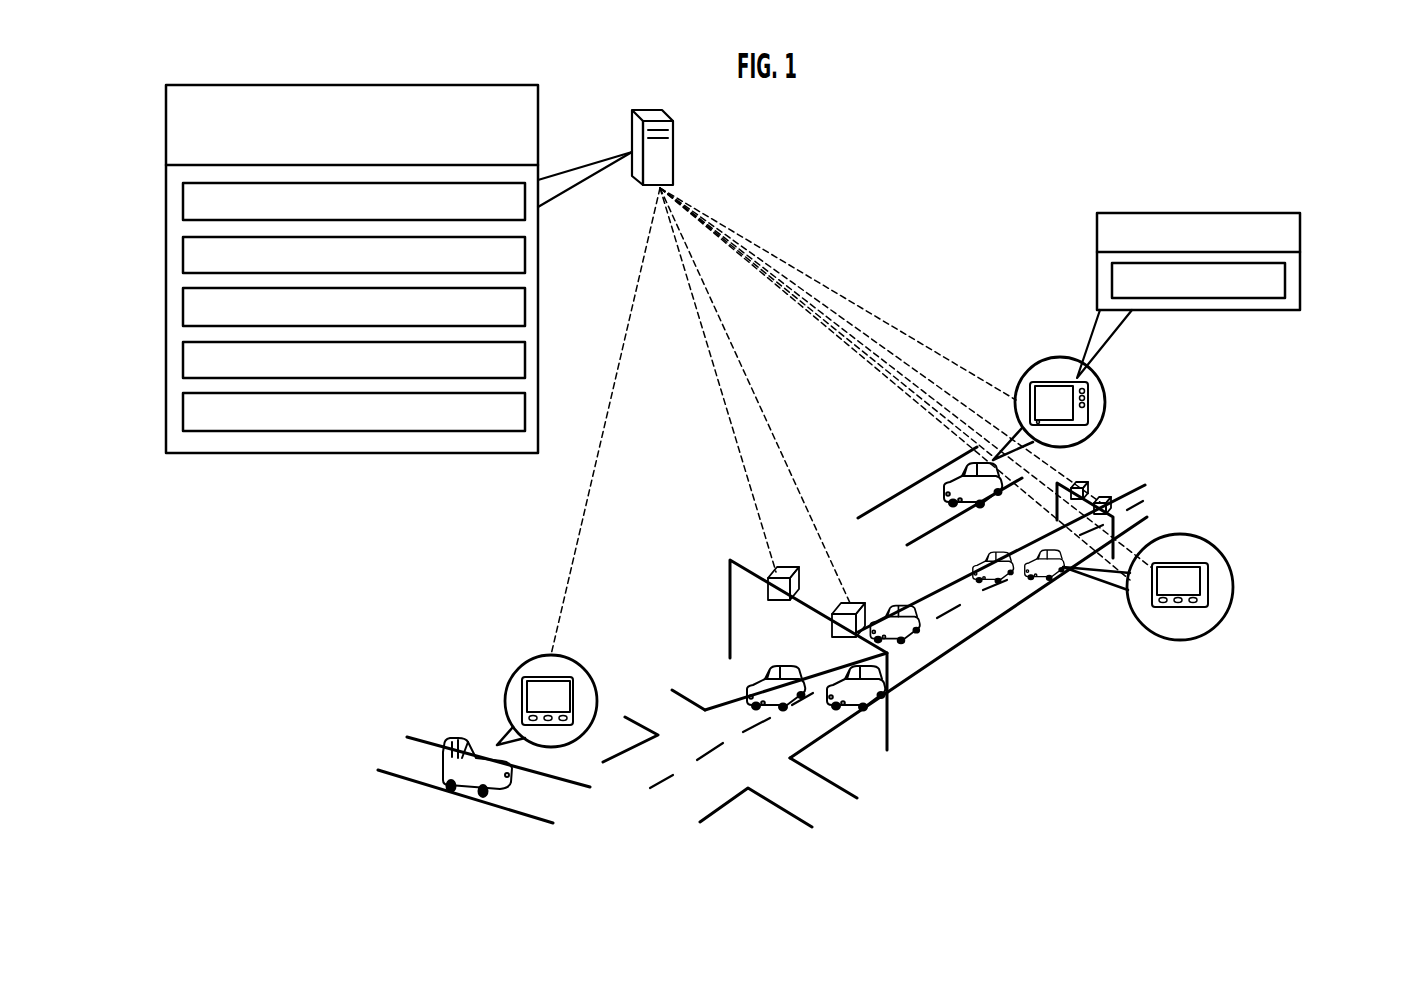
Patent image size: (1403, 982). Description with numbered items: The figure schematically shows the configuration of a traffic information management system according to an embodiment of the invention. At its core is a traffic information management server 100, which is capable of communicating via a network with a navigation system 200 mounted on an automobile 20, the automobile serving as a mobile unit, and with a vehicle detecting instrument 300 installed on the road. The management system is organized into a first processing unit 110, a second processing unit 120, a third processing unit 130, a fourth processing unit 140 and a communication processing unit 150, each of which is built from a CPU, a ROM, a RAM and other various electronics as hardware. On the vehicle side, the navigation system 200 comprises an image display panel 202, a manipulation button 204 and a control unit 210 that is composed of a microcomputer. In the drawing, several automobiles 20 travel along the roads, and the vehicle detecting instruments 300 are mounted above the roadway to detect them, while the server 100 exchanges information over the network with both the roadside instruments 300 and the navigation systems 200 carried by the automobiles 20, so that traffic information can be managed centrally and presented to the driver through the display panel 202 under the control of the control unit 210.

The automobile 20 is at (473, 740).
The traffic information management server 100 is at (673, 148).
The first processing unit 110 is at (525, 213).
The second processing unit 120 is at (525, 257).
The third processing unit 130 is at (525, 309).
The fourth processing unit 140 is at (525, 361).
The communication processing unit 150 is at (525, 412).
The navigation system 200 is at (1068, 380).
The image display panel 202 is at (1040, 383).
The manipulation button 204 is at (1090, 386).
The control unit 210 is at (1285, 280).
The vehicle detecting instrument 300 is at (835, 603).